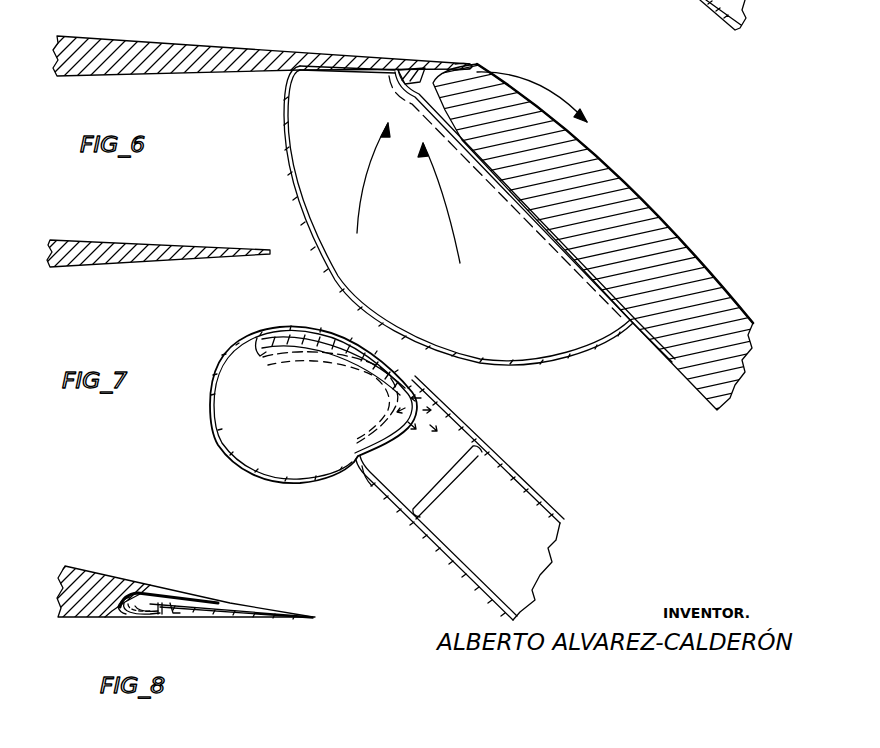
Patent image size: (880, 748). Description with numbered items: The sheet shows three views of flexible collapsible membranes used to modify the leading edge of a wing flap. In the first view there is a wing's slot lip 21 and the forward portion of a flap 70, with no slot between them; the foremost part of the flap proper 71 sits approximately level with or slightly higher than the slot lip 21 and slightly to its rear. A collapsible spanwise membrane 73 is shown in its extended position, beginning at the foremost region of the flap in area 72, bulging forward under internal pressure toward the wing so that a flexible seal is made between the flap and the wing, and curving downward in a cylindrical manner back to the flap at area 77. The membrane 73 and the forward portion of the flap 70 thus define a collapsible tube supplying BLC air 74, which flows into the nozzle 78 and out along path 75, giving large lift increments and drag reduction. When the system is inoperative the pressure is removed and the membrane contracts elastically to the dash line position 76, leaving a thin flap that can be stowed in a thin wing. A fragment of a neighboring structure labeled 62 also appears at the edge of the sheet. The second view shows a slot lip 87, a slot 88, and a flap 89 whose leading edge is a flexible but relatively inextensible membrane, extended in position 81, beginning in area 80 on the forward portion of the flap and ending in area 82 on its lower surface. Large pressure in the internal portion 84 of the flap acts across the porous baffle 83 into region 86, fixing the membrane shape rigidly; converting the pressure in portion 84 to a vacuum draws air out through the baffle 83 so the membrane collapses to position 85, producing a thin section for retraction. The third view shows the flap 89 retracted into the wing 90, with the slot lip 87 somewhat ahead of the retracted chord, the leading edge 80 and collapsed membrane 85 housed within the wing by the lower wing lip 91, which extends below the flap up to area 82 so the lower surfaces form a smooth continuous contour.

In FIG. 6, the slot lip 21 is at (368, 60).
In FIG. 6, the skin fragment 62 is at (676, 0).
In FIG. 6, the flap 70 is at (687, 250).
In FIG. 6, the foremost part of the flap 71 is at (458, 63).
In FIG. 6, the area 72 is at (434, 62).
In FIG. 6, the collapsible spanwise membrane 73 is at (283, 163).
In FIG. 6, the BLC air 74 is at (440, 236).
In FIG. 6, the path 75 is at (567, 108).
In FIG. 6, the dash line position 76 is at (560, 247).
In FIG. 6, the area 77 is at (657, 347).
In FIG. 6, the nozzle 78 is at (479, 70).
In FIG. 7, the area 80 is at (277, 327).
In FIG. 8, the area 80 is at (112, 614).
In FIG. 7, the collapsible spanwise membrane 81 is at (215, 440).
In FIG. 7, the area 82 is at (376, 491).
In FIG. 8, the area 82 is at (176, 609).
In FIG. 7, the porous baffle 83 is at (403, 427).
In FIG. 7, the internal portion of the forward end of the flap 84 is at (415, 484).
In FIG. 7, the collapsed membrane position 85 is at (375, 440).
In FIG. 8, the collapsed membrane position 85 is at (137, 620).
In FIG. 7, the region 86 is at (283, 450).
In FIG. 6, the slot lip 87 is at (271, 254).
In FIG. 8, the slot lip 87 is at (222, 596).
In FIG. 6, the slot 88 is at (285, 286).
In FIG. 7, the flap 89 is at (543, 498).
In FIG. 8, the flap 89 is at (247, 608).
In FIG. 8, the wing 90 is at (116, 574).
In FIG. 8, the lower wing lip 91 is at (152, 613).